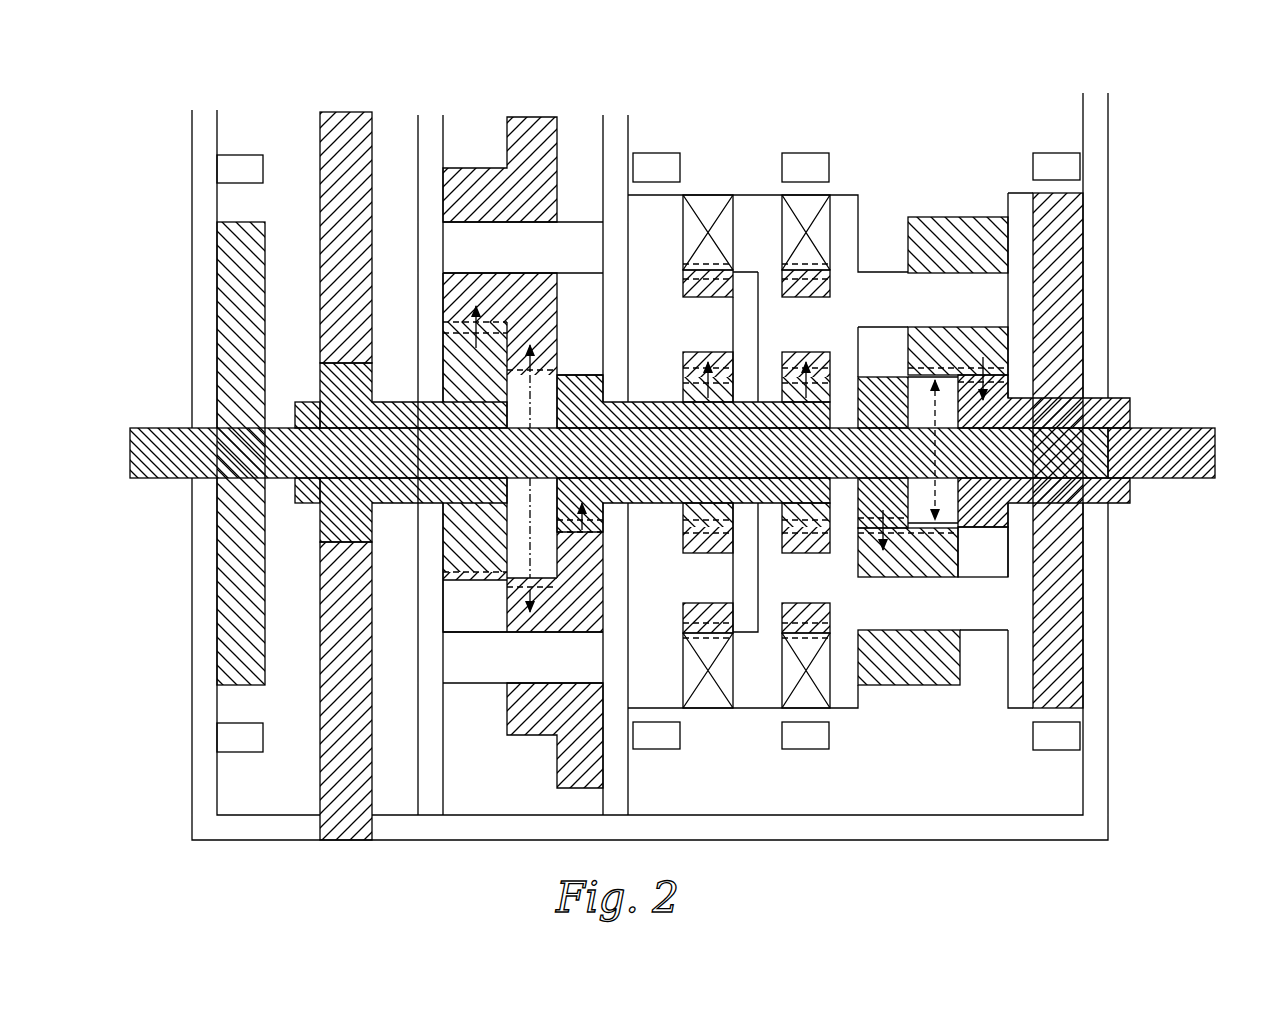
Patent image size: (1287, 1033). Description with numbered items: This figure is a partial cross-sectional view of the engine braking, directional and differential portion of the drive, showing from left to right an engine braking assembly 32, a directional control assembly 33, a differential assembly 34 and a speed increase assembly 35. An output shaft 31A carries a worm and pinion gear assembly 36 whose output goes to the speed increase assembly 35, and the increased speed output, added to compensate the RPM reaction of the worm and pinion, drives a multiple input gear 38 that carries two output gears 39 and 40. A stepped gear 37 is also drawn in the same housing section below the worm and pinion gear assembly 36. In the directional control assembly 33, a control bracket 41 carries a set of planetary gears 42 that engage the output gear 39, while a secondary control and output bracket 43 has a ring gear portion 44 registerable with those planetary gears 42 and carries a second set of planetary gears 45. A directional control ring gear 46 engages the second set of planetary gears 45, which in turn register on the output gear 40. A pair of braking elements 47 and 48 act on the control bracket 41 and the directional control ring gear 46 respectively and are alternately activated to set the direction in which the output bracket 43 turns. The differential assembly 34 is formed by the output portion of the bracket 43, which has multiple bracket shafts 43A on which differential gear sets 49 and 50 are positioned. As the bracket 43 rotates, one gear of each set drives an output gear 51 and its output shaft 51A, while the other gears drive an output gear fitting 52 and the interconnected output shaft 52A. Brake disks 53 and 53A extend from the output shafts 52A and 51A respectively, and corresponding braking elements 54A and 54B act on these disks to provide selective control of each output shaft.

The output shaft 31A is at (345, 122).
The engine braking assembly 32 is at (398, 98).
The directional control assembly 33 is at (733, 174).
The differential assembly 34 is at (922, 190).
The speed increase assembly 35 is at (500, 98).
The worm and pinion gear assembly 36 is at (540, 195).
The lower gear 37 is at (530, 720).
The multiple input gear 38 is at (650, 508).
The output gear 39 is at (683, 397).
The output gear 40 is at (774, 388).
The control bracket 41 is at (662, 225).
The planetary gears 42 is at (720, 283).
The secondary control and output bracket 43 is at (1017, 260).
The bracket shafts 43A is at (977, 610).
The ring gear portion 44 is at (757, 224).
The second set of planetary gears 45 is at (820, 300).
The directional control ring gear 46 is at (822, 232).
The braking element 47 is at (660, 165).
The braking element 48 is at (806, 165).
The differential gear set 49 is at (957, 215).
The differential gear set 50 is at (938, 688).
The output gear 51 is at (958, 347).
The output shaft 51A is at (172, 445).
The output gear fitting 52 is at (1106, 404).
The output shaft 52A is at (1178, 432).
The brake disk 53 is at (1068, 318).
The brake disk 53A is at (232, 320).
The braking element 54A is at (1062, 168).
The braking element 54B is at (245, 167).